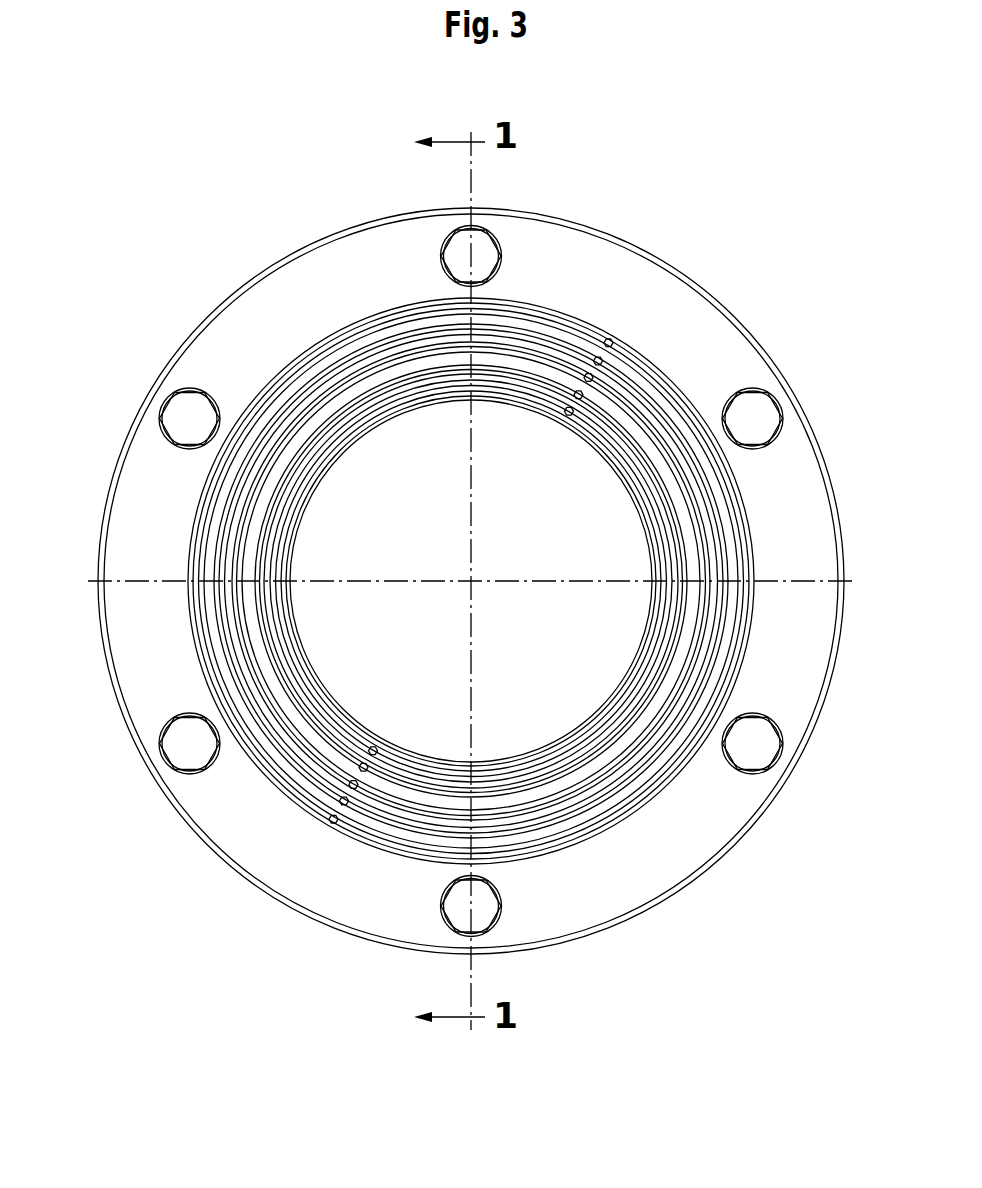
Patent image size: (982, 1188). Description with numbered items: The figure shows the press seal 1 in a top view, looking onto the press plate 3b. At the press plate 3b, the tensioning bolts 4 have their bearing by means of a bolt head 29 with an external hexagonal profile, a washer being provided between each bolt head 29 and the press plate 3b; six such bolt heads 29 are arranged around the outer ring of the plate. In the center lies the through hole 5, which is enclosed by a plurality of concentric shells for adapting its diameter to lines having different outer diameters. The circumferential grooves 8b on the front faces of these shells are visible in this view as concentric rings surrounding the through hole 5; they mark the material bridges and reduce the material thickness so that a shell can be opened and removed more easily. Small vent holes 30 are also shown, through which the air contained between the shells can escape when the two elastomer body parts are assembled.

The press seal 1 is at (722, 868).
The press plate 3b is at (576, 258).
The tensioning bolt 4 is at (190, 384).
The through hole 5 is at (558, 490).
The circumferential groove 8b is at (370, 415).
The bolt head 29 is at (178, 420).
The vent hole 30 is at (356, 789).